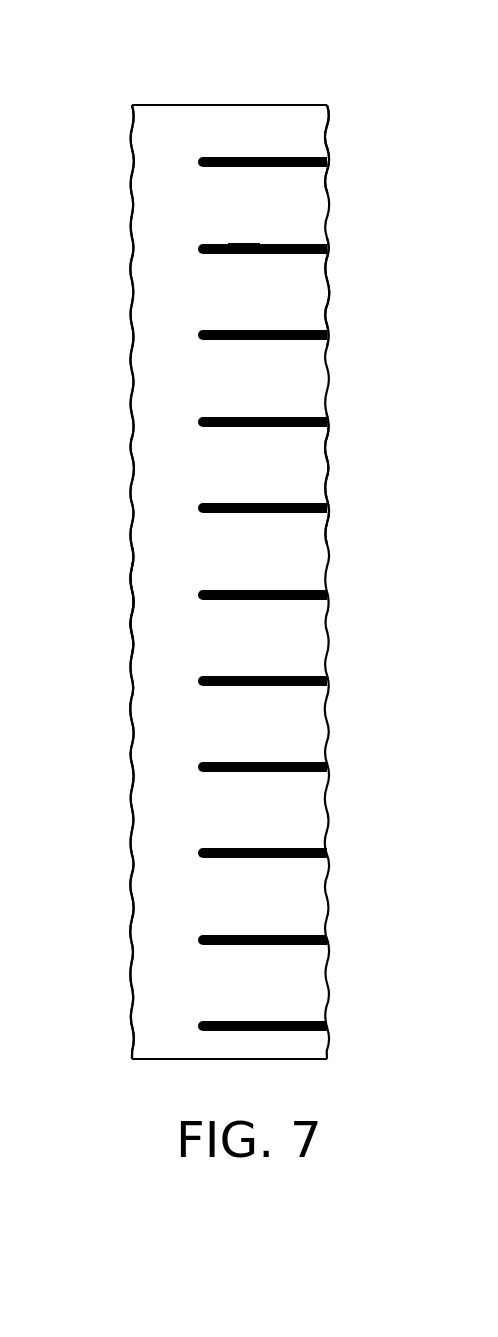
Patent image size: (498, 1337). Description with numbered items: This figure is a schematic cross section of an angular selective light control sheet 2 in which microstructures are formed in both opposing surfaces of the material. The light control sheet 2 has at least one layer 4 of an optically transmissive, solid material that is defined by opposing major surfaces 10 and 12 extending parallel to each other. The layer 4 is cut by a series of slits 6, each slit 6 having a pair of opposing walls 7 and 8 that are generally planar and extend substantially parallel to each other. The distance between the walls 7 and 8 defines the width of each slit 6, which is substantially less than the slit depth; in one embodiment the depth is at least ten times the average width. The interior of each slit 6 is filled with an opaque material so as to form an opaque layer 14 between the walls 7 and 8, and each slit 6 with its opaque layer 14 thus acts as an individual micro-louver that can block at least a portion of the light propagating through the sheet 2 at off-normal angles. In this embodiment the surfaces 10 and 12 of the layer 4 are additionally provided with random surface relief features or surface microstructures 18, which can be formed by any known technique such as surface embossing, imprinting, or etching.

The light control sheet 2 is at (277, 82).
The layer 4 is at (180, 992).
The slit 6 is at (222, 254).
The wall 7 is at (246, 244).
The wall 8 is at (288, 255).
The major surface 10 is at (364, 170).
The major surface 12 is at (130, 271).
The opaque layer 14 is at (328, 250).
The surface microstructures 18 is at (330, 442).